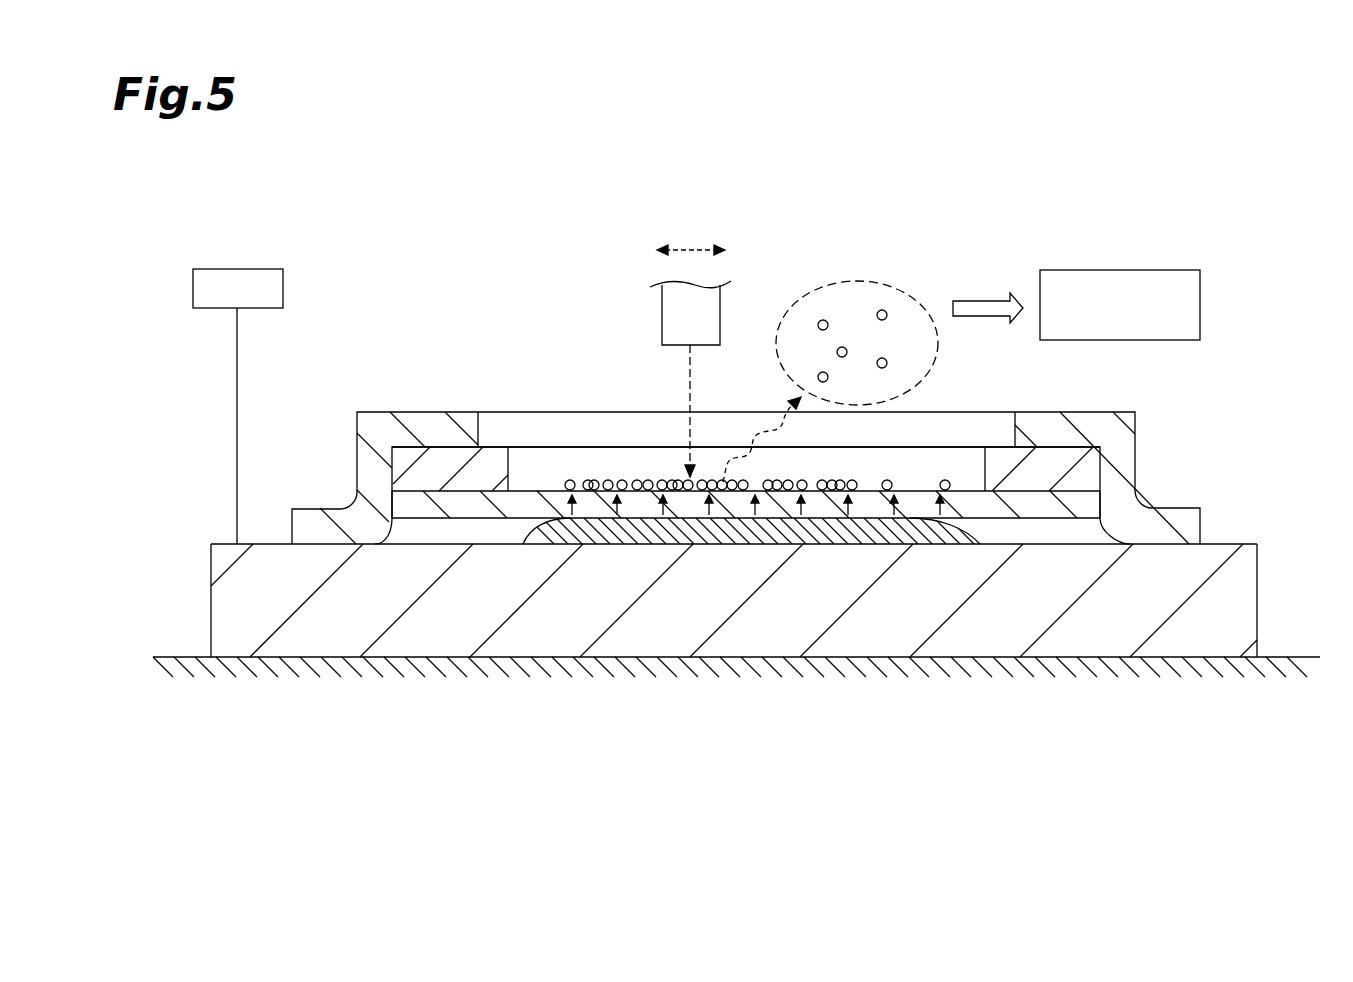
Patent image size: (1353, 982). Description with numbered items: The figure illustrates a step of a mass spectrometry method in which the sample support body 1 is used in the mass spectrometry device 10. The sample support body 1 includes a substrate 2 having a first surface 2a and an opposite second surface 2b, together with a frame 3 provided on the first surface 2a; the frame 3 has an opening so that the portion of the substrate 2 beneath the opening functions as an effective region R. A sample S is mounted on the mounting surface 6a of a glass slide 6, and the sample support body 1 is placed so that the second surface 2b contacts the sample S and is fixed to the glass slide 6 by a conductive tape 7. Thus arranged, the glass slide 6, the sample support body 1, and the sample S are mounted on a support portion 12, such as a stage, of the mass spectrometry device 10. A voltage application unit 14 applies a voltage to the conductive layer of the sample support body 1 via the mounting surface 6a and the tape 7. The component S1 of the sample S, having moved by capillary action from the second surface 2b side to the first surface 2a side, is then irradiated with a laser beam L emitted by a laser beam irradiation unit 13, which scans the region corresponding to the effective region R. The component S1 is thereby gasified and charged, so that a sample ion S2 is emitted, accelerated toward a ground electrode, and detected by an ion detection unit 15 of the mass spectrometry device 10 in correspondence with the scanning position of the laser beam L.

The sample support body 1 is at (1080, 447).
The substrate 2 is at (1083, 505).
The first surface 2a is at (536, 490).
The second surface 2b is at (515, 520).
The frame 3 is at (1001, 455).
The glass slide 6 is at (1245, 614).
The mounting surface 6a is at (1220, 544).
The tape 7 is at (320, 506).
The mass spectrometry device 10 is at (1183, 264).
The support portion 12 is at (190, 657).
The laser beam irradiation unit 13 is at (662, 322).
The voltage application unit 14 is at (283, 283).
The ion detection unit 15 is at (1200, 305).
The laser beam L is at (687, 377).
The effective region R is at (967, 482).
The sample S is at (980, 544).
The component S1 is at (847, 484).
The sample ion S2 is at (882, 310).